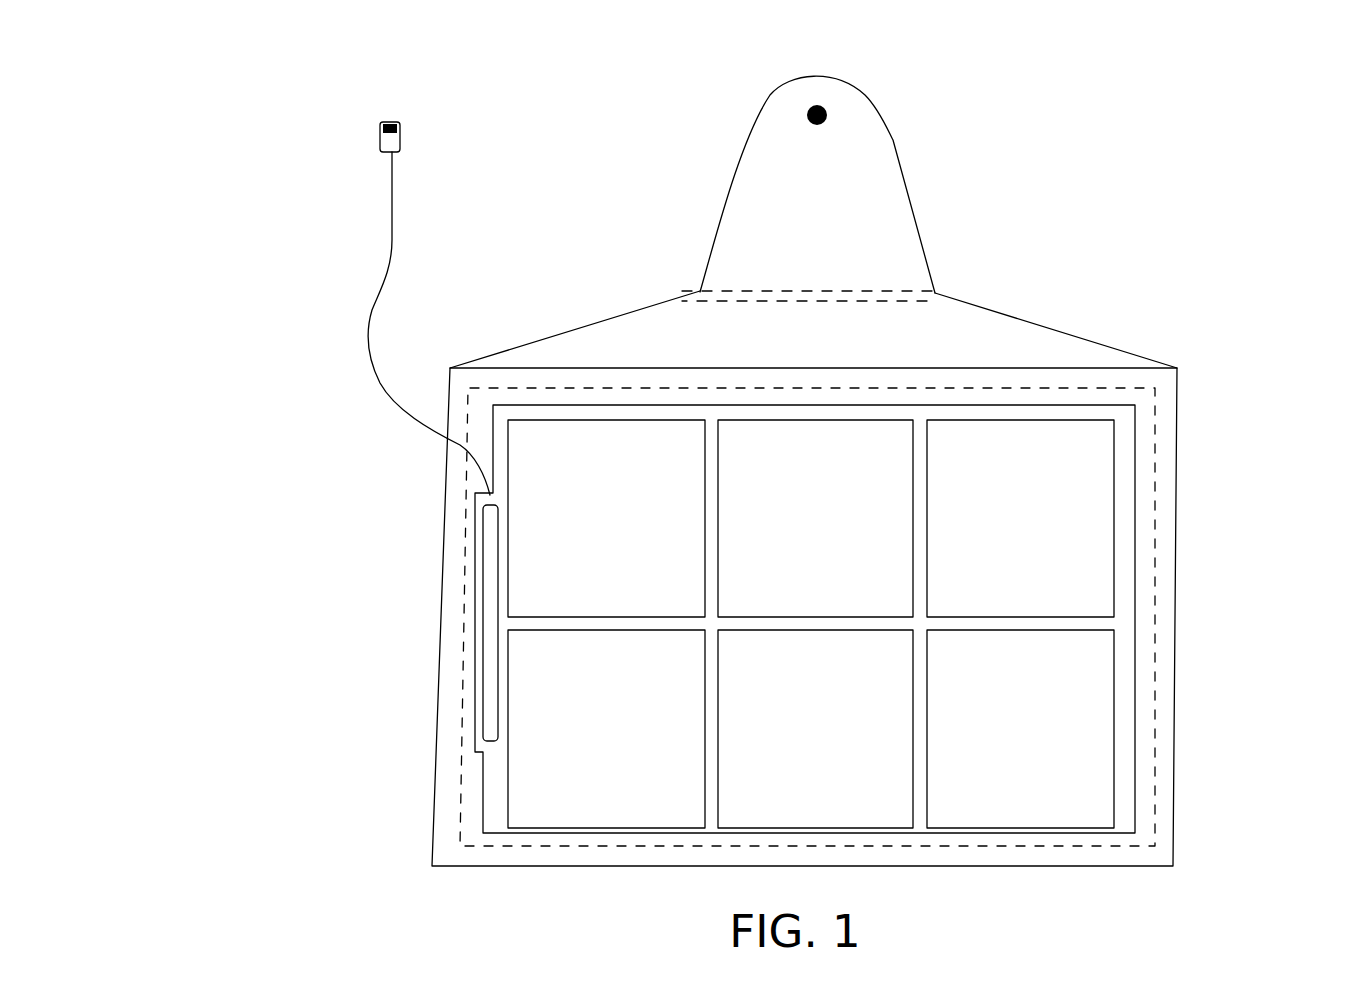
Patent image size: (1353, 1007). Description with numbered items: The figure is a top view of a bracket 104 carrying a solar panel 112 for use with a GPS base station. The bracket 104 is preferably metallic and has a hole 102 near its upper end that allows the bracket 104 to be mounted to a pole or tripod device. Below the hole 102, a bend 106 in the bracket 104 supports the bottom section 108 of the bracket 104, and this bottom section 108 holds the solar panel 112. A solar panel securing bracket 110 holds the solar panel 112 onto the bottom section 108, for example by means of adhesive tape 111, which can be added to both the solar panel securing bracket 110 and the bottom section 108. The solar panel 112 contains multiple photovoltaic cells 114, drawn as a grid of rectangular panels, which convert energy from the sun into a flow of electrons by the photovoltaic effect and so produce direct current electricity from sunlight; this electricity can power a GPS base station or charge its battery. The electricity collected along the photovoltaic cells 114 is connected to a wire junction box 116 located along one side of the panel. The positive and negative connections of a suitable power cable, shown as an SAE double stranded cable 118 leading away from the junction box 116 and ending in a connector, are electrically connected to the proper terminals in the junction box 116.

The hole 102 is at (826, 110).
The bracket 104 is at (863, 220).
The bend 106 is at (933, 296).
The bottom section 108 is at (1095, 352).
The solar panel securing bracket 110 is at (1167, 398).
The adhesive tape 111 is at (1177, 490).
The solar panel 112 is at (1125, 618).
The photovoltaic cells 114 is at (527, 775).
The wire junction box 116 is at (482, 628).
The SAE double stranded cable 118 is at (372, 368).